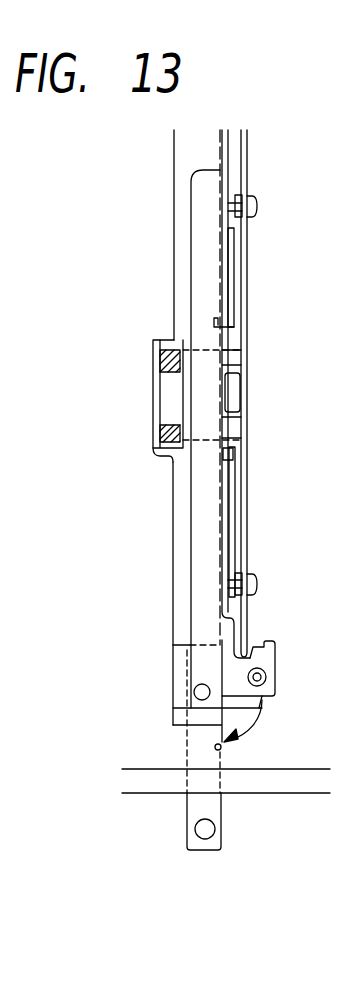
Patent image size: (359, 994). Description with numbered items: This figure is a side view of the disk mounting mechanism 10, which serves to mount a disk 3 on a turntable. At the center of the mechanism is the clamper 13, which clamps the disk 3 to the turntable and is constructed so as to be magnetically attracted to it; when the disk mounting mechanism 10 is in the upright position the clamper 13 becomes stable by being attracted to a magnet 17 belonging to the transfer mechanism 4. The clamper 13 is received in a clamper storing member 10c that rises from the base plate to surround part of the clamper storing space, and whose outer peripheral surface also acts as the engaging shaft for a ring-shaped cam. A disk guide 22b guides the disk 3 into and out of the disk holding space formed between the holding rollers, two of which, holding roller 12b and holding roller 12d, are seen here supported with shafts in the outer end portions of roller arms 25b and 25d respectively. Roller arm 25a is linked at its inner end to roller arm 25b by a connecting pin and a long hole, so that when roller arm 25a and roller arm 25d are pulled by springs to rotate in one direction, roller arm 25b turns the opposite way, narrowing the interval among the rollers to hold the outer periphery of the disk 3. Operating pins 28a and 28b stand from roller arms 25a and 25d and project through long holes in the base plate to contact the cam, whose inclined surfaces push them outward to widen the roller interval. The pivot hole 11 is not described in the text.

The disk 3 is at (248, 281).
The transfer mechanism 4 is at (186, 743).
The disk mounting mechanism 10 is at (190, 572).
The clamper storing member 10c is at (160, 394).
The pivot hole 11 is at (194, 688).
The holding roller 12b is at (257, 200).
The holding roller 12d is at (256, 578).
The clamper 13 is at (237, 390).
The magnet 17 is at (160, 438).
The disk guide 22b is at (260, 646).
The roller arm 25a is at (225, 253).
The roller arm 25b is at (224, 224).
The roller arm 25d is at (232, 522).
The operating pin 28a is at (220, 320).
The operating pin 28b is at (230, 470).